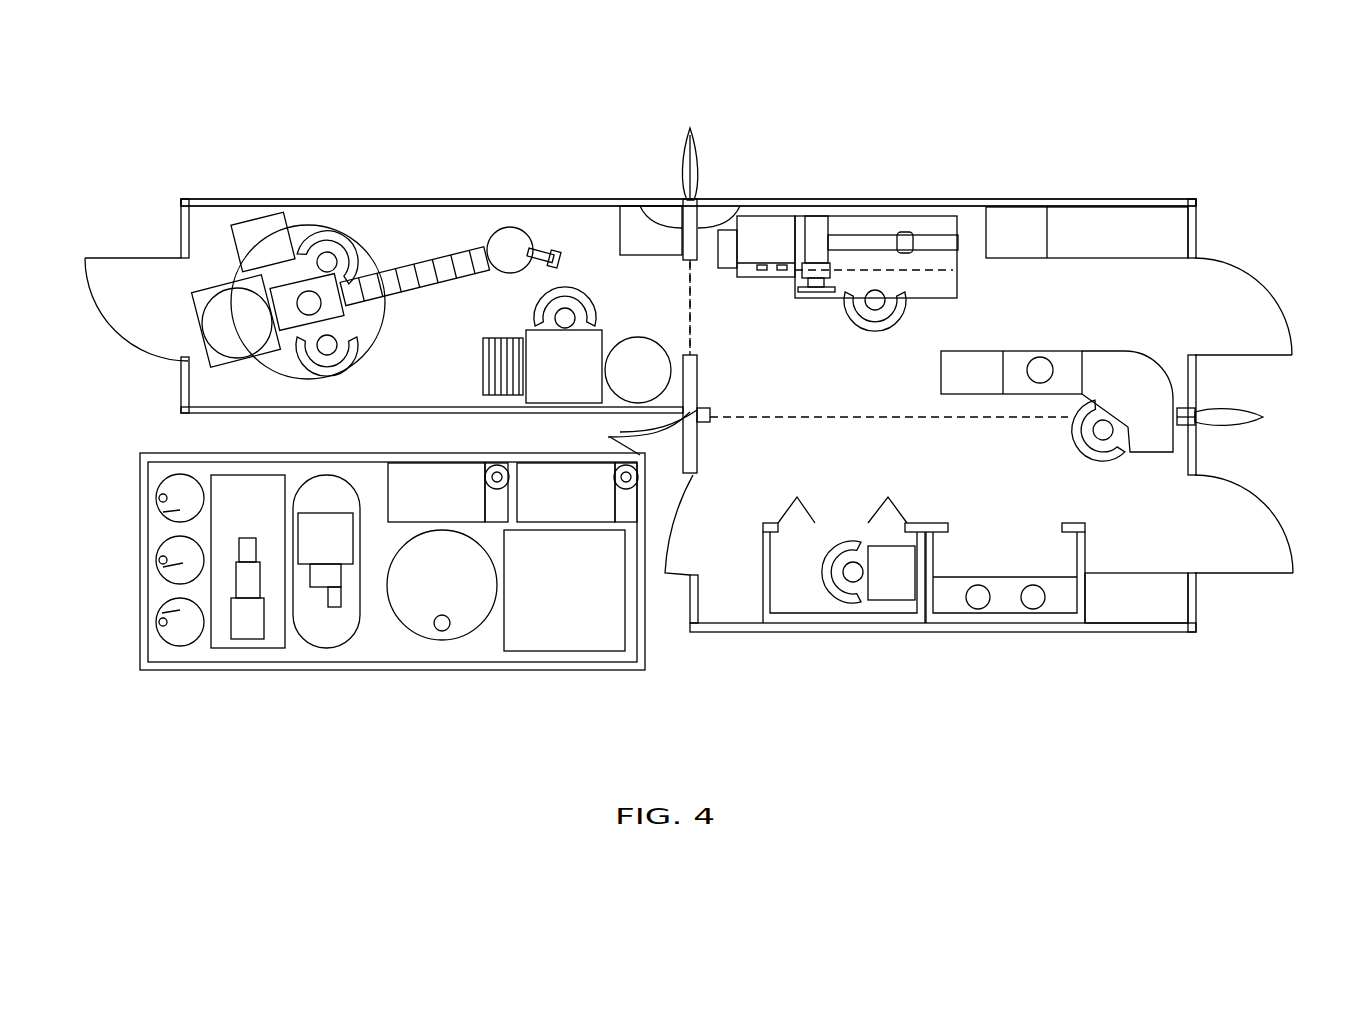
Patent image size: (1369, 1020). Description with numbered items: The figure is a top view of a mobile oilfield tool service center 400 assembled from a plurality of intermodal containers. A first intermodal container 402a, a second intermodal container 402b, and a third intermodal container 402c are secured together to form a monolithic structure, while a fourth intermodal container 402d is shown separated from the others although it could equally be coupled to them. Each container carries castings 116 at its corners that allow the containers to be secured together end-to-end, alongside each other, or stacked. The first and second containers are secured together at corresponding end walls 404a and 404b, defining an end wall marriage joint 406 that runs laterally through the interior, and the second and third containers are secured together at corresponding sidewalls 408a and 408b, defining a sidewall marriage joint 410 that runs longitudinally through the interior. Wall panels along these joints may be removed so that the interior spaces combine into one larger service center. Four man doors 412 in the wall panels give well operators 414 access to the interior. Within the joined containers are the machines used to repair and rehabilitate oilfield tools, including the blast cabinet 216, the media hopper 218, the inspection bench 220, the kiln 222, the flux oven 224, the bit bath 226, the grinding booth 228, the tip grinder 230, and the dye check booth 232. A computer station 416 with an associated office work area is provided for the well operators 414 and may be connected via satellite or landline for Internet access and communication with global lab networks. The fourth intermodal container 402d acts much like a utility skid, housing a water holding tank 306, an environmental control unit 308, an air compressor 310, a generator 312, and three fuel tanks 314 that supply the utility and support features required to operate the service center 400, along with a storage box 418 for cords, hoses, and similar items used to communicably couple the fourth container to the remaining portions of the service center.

The mobile oilfield tool service center 400 is at (1138, 92).
The castings 116 is at (184, 199).
The man doors 412 is at (120, 258).
The well operators 414 is at (328, 232).
The first intermodal container 402a is at (462, 193).
The second intermodal container 402b is at (905, 197).
The third intermodal container 402c is at (905, 637).
The fourth intermodal container 402d is at (350, 672).
The end wall 404a is at (665, 228).
The end wall 404b is at (715, 226).
The end wall marriage joint 406 is at (695, 300).
The sidewall 408a is at (700, 410).
The sidewall 408b is at (700, 425).
The sidewall marriage joint 410 is at (880, 412).
The computer station 416 is at (1122, 398).
The storage box 418 is at (550, 595).
The inspection bench 220 is at (1093, 236).
The kiln 222 is at (222, 338).
The flux oven 224 is at (248, 256).
The bit bath 226 is at (512, 230).
The blast cabinet 216 is at (548, 372).
The media hopper 218 is at (623, 384).
The grinding booth 228 is at (780, 589).
The tip grinder 230 is at (751, 252).
The dye check booth 232 is at (988, 557).
The water holding tank 306 is at (427, 591).
The environmental control unit 308 is at (422, 502).
The air compressor 310 is at (310, 547).
The generator 312 is at (233, 510).
The fuel tanks 314 is at (158, 618).